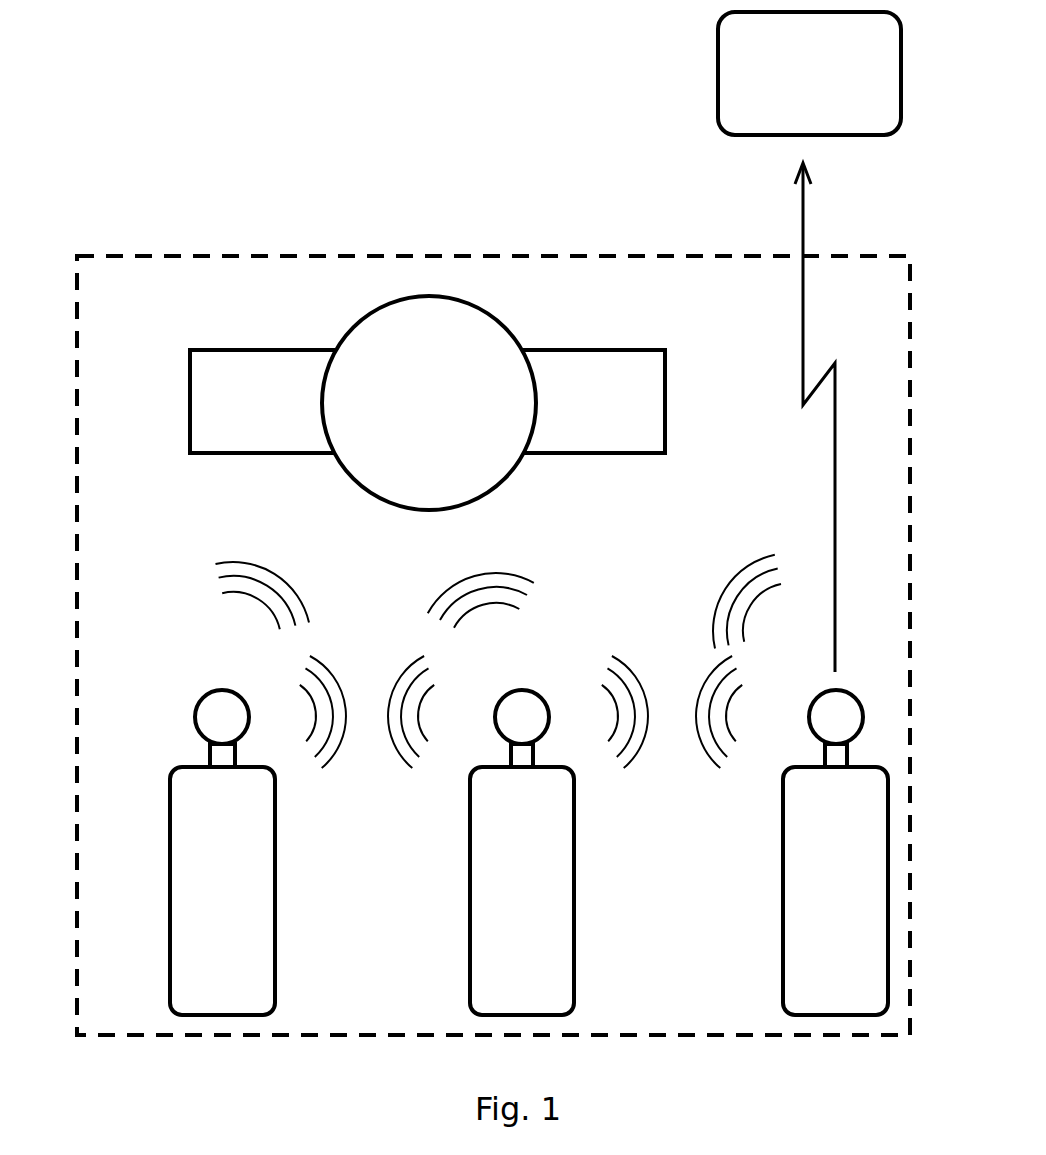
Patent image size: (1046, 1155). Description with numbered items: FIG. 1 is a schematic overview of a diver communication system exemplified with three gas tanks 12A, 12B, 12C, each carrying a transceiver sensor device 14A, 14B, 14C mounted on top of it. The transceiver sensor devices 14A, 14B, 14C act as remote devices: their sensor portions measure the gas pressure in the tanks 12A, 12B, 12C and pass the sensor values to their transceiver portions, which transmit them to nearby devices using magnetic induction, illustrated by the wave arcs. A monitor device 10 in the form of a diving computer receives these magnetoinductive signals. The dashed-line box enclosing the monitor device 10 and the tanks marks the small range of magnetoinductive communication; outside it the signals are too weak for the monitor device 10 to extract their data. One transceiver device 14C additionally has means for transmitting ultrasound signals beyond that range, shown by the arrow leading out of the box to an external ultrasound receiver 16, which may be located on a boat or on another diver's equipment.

The monitor device 10 is at (409, 421).
The gas tank 12A is at (252, 915).
The gas tank 12B is at (552, 913).
The gas tank 12C is at (865, 911).
The transceiver sensor device 14A is at (205, 737).
The transceiver sensor device 14B is at (507, 740).
The transceiver sensor device 14C is at (813, 740).
The ultrasound receiver 16 is at (790, 90).